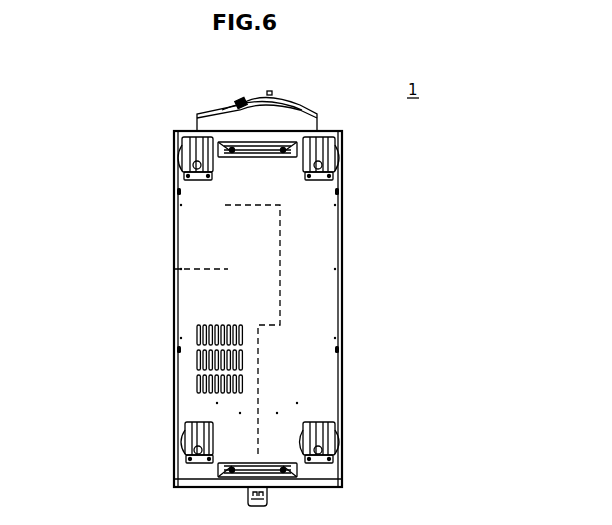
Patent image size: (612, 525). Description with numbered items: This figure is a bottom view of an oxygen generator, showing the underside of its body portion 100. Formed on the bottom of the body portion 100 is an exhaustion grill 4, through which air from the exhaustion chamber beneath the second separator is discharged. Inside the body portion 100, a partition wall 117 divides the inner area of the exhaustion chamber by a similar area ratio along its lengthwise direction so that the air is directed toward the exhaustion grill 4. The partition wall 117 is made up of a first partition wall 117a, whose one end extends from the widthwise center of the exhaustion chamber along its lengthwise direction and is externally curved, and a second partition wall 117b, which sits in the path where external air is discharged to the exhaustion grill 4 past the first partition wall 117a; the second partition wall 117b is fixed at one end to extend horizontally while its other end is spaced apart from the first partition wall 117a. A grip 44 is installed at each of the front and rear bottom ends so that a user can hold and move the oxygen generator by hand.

The body portion 100 is at (343, 282).
The grip 44 is at (288, 150).
The partition wall 117 is at (86, 193).
The first partition wall 117a is at (229, 205).
The second partition wall 117b is at (204, 269).
The exhaustion grill 4 is at (197, 360).